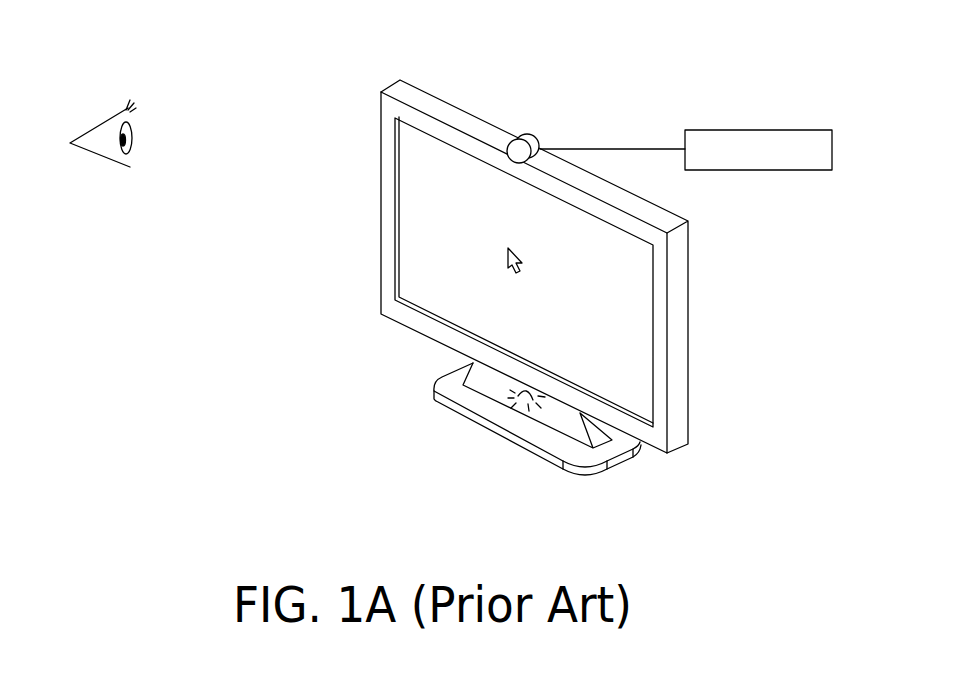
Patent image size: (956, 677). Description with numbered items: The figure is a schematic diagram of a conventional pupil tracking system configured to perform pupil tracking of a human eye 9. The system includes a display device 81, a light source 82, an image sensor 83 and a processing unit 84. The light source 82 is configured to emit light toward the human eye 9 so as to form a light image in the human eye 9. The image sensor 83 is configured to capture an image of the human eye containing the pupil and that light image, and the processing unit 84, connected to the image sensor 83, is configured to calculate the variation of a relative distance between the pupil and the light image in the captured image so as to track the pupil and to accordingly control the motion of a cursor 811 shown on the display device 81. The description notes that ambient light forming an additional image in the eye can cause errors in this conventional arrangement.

The human eye 9 is at (140, 79).
The display device 81 is at (682, 355).
The cursor 811 is at (509, 268).
The light source 82 is at (518, 403).
The image sensor 83 is at (533, 138).
The processing unit 84 is at (713, 130).